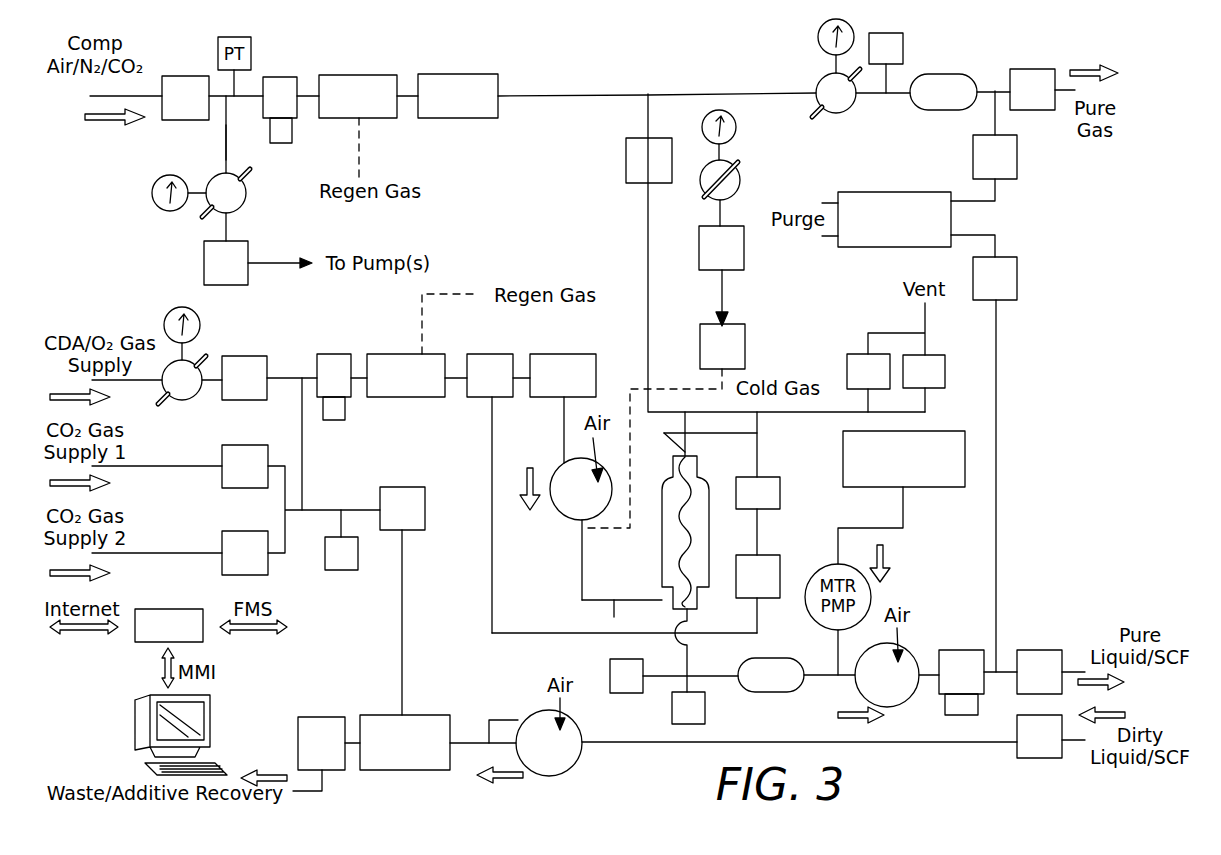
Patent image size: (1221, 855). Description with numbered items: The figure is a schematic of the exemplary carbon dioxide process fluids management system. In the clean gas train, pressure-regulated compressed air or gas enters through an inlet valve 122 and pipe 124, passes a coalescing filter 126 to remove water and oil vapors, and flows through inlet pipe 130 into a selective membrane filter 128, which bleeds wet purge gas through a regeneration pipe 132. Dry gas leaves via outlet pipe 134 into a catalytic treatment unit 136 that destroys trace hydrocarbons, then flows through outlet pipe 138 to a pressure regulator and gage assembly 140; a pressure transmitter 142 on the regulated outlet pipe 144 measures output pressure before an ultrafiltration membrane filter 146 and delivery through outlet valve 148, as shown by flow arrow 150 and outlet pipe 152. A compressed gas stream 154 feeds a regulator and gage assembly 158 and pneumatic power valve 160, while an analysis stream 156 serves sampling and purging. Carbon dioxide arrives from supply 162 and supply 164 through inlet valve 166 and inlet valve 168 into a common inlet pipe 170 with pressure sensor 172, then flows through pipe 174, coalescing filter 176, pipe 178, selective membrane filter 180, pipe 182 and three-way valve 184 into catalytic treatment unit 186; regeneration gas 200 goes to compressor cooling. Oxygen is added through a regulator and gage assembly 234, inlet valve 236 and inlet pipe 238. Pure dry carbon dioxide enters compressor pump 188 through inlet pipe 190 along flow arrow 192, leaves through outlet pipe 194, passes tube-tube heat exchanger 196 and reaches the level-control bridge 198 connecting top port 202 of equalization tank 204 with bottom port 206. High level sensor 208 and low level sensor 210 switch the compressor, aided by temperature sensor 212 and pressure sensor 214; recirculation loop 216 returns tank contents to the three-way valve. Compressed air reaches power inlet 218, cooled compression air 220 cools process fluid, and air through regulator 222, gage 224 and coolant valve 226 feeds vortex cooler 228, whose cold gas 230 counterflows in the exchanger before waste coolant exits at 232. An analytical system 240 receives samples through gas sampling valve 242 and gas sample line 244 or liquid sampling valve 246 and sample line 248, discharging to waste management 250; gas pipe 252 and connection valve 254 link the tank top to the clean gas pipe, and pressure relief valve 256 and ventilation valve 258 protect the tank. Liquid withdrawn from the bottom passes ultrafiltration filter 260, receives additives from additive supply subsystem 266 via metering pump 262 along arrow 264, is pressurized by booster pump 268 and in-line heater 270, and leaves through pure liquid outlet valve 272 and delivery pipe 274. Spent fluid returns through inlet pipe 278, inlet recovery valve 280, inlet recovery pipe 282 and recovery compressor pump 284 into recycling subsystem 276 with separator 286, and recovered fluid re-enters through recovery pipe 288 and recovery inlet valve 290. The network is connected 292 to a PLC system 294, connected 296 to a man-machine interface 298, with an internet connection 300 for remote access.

The inlet valve 122 is at (171, 77).
The pipe 124 is at (247, 99).
The coalescing filter 126 is at (278, 78).
The selective membrane filter 128 is at (350, 76).
The inlet pipe 130 is at (303, 100).
The regeneration pipe 132 is at (361, 150).
The outlet pipe 134 is at (403, 93).
The catalytic treatment unit 136 is at (465, 75).
The outlet pipe 138 is at (514, 93).
The pressure regulator and gage assembly 140 is at (845, 108).
The pressure transmitter 142 is at (894, 33).
The regulated clean dry gas outlet pipe 144 is at (878, 95).
The ultrafiltration membrane filter 146 is at (970, 75).
The outlet valve 148 is at (1018, 69).
The flow arrow 150 is at (1103, 68).
The outlet pipe 152 is at (1066, 89).
The compressed gas output stream 154 is at (222, 143).
The analysis pipe gas stream 156 is at (994, 118).
The regulator and gage assembly 158 is at (241, 205).
The pneumatic power valve 160 is at (207, 250).
The CO2 supply 1 162 is at (97, 484).
The CO2 supply 2 164 is at (97, 571).
The inlet valve 1 166 is at (241, 448).
The inlet valve 2 168 is at (243, 532).
The common inlet pipe 170 is at (303, 500).
The pressure sensor 172 is at (334, 571).
The pipe 174 is at (303, 438).
The coalescing filter 176 is at (324, 356).
The pipe 178 is at (358, 376).
The selective membrane filter 180 is at (383, 356).
The pipe 182 is at (451, 376).
The three-way valve 184 is at (495, 358).
The catalytic treatment unit 186 is at (574, 356).
The compressor pump 188 is at (567, 516).
The inlet pipe 190 is at (563, 416).
The flow arrow 192 is at (527, 478).
The outlet pipe 194 is at (582, 575).
The tube-tube heat exchanger 196 is at (680, 548).
The vapor-liquid separation and level-control bridge 198 is at (759, 450).
The regeneration gas 200 is at (472, 293).
The top port 202 is at (683, 430).
The equalization holding tank 204 is at (662, 580).
The bottom port 206 is at (689, 648).
The high level optical sensor 208 is at (780, 500).
The low level optical sensor 210 is at (768, 560).
The temperature sensor 212 is at (612, 659).
The pressure sensor 214 is at (672, 708).
The recirculation pipe loop 216 is at (492, 420).
The power inlet 218 is at (592, 440).
The cooled compression air 220 is at (586, 545).
The regulator 222 is at (742, 184).
The gage 224 is at (738, 130).
The coolant valve 226 is at (745, 266).
The vortex cooler 228 is at (737, 330).
The cold gas fraction 230 is at (630, 388).
The waste coolant flow 232 is at (612, 605).
The regulator and gage assembly 234 is at (193, 398).
The inlet valve 236 is at (240, 358).
The inlet pipe 238 is at (287, 376).
The analytical system 240 is at (912, 192).
The gas sampling valve 242 is at (1017, 156).
The gas sample line 244 is at (995, 192).
The liquid sampling valve 246 is at (1017, 284).
The sample line 248 is at (995, 246).
The waste management module 250 is at (822, 238).
The gas pipe 252 is at (648, 206).
The connection valve 254 is at (628, 146).
The pressure relief valve 256 is at (848, 370).
The ventilation valve 258 is at (945, 372).
The ultrafiltration membrane filter 260 is at (797, 690).
The metering pump 262 is at (830, 626).
The arrow 264 is at (892, 566).
The additive supply subsystem 266 is at (953, 487).
The booster pump 268 is at (919, 652).
The in-line heater element 270 is at (960, 650).
The pure liquid outlet valve 272 is at (1025, 650).
The delivery pipe 274 is at (1078, 670).
The recovery and recycling subsystem 276 is at (432, 715).
The inlet pipe 278 is at (1070, 746).
The inlet recovery valve 280 is at (1028, 758).
The inlet recovery pipe 282 is at (620, 744).
The recovery compressor pump 284 is at (535, 718).
The separator 286 is at (320, 717).
The recovery pipe 288 is at (403, 560).
The recovery inlet valve 290 is at (403, 487).
The connection 292 is at (250, 632).
The PLC system with software 294 is at (193, 609).
The connection 296 is at (161, 672).
The man-machine interface system 298 is at (137, 714).
The internet or factory ethernet connection 300 is at (64, 632).